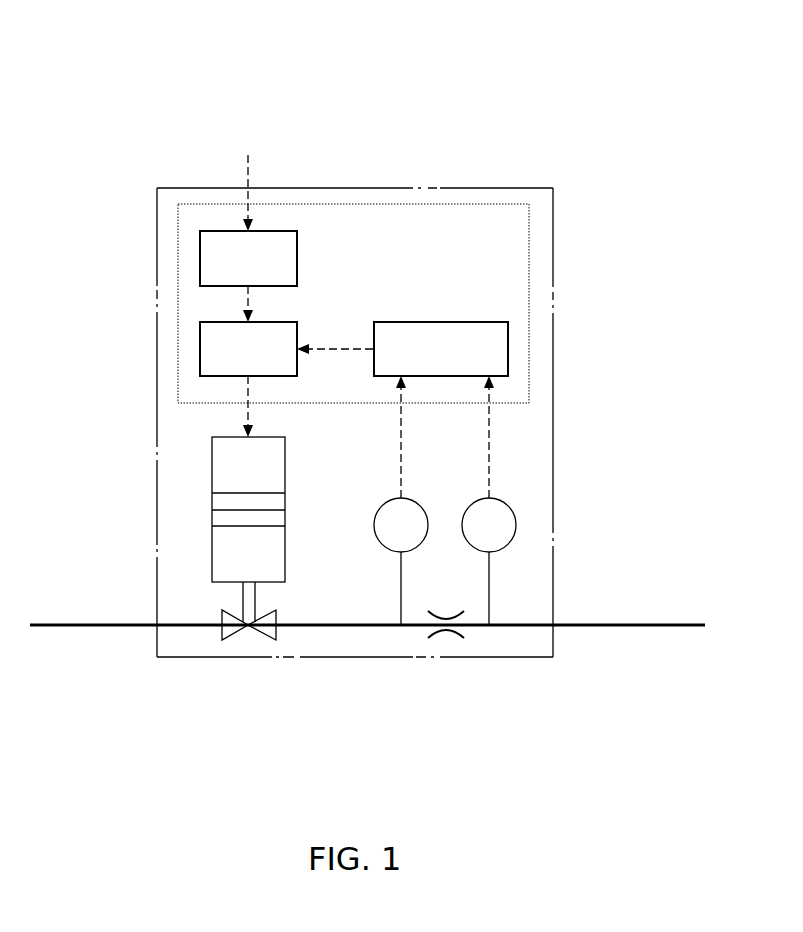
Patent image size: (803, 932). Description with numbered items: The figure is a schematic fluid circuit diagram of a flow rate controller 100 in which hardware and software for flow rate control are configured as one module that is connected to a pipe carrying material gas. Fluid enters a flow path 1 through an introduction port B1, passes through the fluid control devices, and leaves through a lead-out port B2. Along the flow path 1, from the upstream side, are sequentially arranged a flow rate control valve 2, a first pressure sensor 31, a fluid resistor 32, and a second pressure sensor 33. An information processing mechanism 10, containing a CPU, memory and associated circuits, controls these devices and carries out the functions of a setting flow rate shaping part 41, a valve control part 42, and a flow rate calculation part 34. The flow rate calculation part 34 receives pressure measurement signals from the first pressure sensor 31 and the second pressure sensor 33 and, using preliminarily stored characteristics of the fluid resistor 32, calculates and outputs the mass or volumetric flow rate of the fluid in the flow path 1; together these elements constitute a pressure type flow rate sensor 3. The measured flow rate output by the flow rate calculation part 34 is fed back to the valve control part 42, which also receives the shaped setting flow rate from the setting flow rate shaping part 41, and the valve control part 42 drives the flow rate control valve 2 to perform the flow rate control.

The flow rate controller 100 is at (141, 106).
The flow path 1 is at (183, 628).
The introduction port B1 is at (157, 623).
The lead-out port B2 is at (553, 622).
The pressure type flow rate sensor 3 is at (560, 344).
The information processing mechanism 10 is at (423, 203).
The setting flow rate shaping part 41 is at (297, 258).
The valve control part 42 is at (200, 349).
The flow rate calculation part 34 is at (508, 349).
The flow rate control valve 2 is at (212, 478).
The first pressure sensor 31 is at (382, 506).
The second pressure sensor 33 is at (508, 506).
The fluid resistor 32 is at (446, 634).